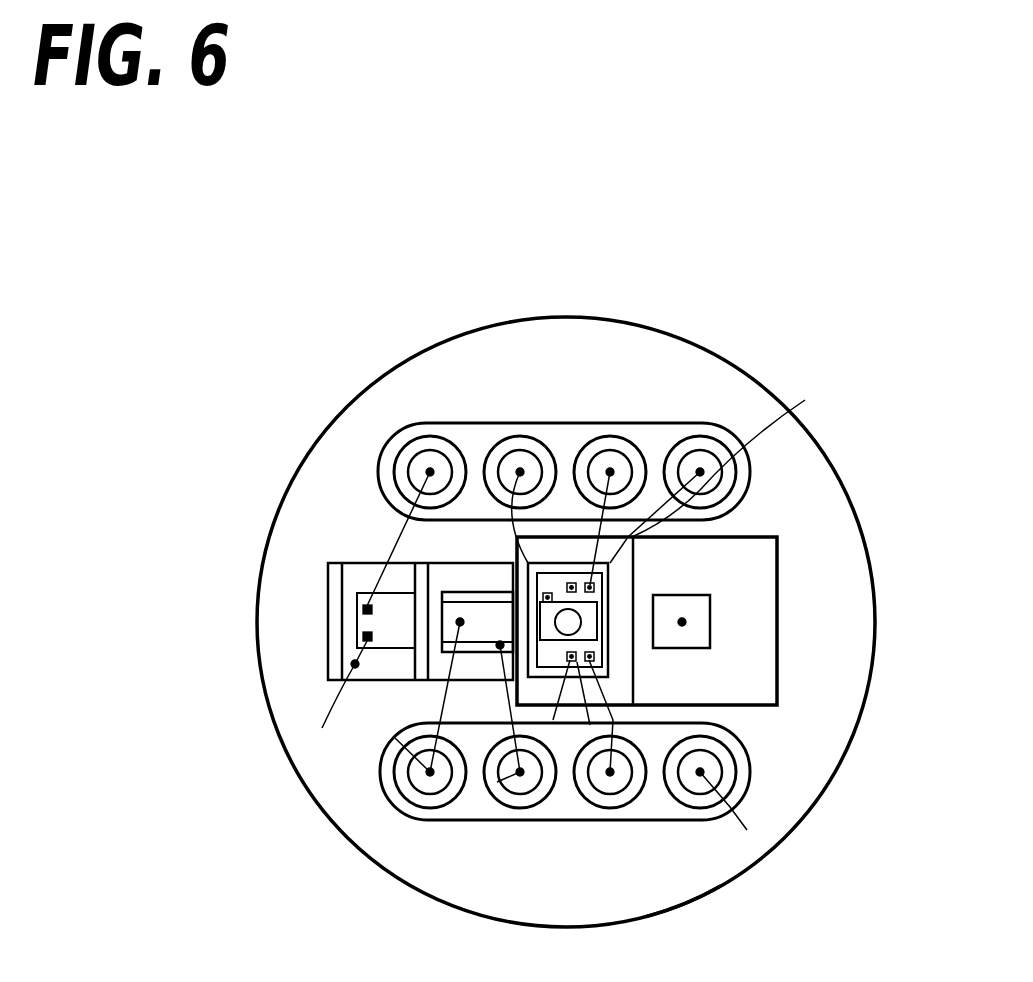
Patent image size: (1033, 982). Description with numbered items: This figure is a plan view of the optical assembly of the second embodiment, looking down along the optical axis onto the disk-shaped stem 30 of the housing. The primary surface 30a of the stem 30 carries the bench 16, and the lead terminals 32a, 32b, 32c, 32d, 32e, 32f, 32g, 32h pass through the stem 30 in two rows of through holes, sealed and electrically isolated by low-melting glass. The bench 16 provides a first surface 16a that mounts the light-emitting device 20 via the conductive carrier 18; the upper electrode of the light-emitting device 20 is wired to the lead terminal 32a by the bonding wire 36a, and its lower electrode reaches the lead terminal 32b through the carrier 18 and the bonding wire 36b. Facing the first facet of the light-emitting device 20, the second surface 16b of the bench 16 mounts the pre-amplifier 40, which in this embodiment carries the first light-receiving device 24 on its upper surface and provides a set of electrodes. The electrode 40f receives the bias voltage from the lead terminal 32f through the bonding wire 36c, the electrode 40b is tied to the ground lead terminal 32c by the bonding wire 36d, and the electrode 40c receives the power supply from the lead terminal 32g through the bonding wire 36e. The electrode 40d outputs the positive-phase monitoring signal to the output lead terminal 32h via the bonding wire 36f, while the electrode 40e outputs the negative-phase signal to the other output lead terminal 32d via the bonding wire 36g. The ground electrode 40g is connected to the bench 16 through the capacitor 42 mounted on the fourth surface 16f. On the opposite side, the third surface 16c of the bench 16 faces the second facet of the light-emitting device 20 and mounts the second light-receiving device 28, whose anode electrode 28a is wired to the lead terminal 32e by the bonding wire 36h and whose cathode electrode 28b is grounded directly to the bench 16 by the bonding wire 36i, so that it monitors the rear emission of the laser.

The bench 16 is at (763, 692).
The first surface 16a is at (473, 660).
The second surface 16b is at (610, 670).
The third surface 16c is at (325, 711).
The fourth surface 16f is at (750, 663).
The carrier 18 is at (457, 592).
The light-emitting device 20 is at (484, 612).
The first light-receiving device 24 is at (553, 720).
The second light-receiving device 28 is at (352, 620).
The anode electrode 28a is at (358, 602).
The cathode electrode 28b is at (373, 642).
The stem 30 is at (797, 828).
The primary surface 30a is at (708, 873).
The lead terminal 32a is at (430, 772).
The lead terminal 32b is at (520, 772).
The ground lead terminal 32c is at (610, 772).
The output lead terminal 32d is at (700, 772).
The lead terminal 32e is at (431, 468).
The lead terminal 32f is at (520, 472).
The lead terminal 32g is at (612, 470).
The output lead terminal 32h is at (702, 470).
The bonding wire 36a is at (408, 734).
The bonding wire 36b is at (497, 782).
The bonding wire 36c is at (546, 596).
The bonding wire 36d is at (590, 725).
The bonding wire 36e is at (585, 585).
The bonding wire 36f is at (740, 458).
The bonding wire 36g is at (705, 773).
The bonding wire 36h is at (392, 550).
The bonding wire 36i is at (348, 648).
The pre-amplifier 40 is at (605, 580).
The electrode 40b is at (695, 705).
The electrode 40c is at (571, 586).
The electrode 40d is at (602, 575).
The electrode 40e is at (600, 650).
The electrode 40f is at (518, 470).
The ground electrode 40g is at (597, 605).
The capacitor 42 is at (684, 622).